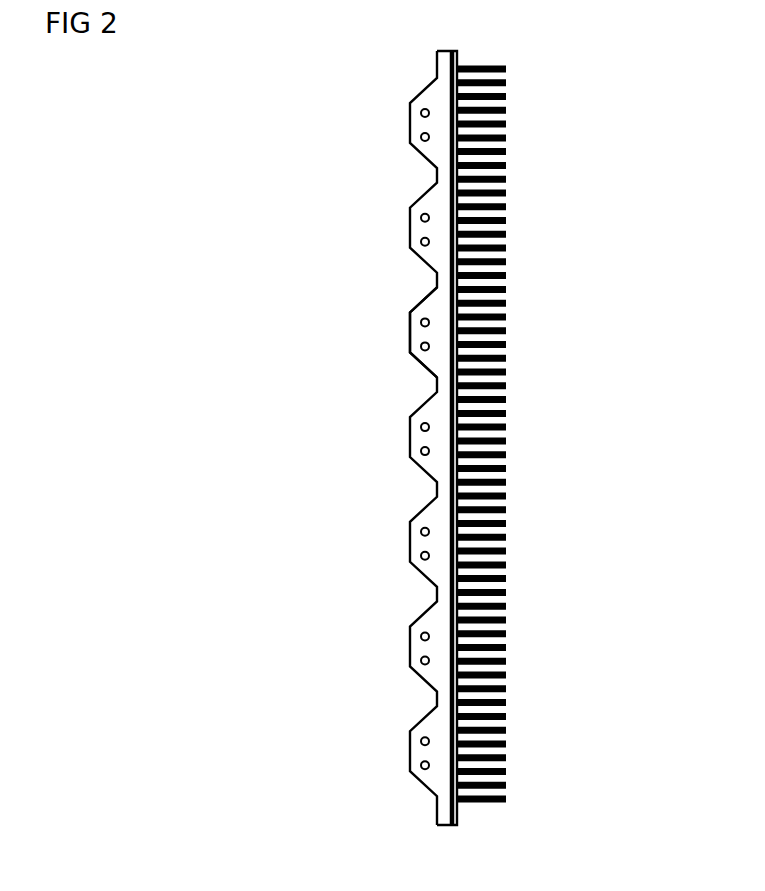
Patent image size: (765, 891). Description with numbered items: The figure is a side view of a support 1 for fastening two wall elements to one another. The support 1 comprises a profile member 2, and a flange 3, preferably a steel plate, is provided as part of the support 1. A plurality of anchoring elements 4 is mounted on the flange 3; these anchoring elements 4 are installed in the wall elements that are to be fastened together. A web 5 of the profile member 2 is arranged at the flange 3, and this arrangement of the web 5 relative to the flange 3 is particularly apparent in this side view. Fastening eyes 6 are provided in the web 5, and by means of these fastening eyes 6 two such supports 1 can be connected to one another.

The support 1 is at (378, 117).
The profile member 2 is at (412, 267).
The flange 3 is at (455, 823).
The anchoring elements 4 is at (505, 284).
The web 5 is at (417, 333).
The fastening eyes 6 is at (415, 635).